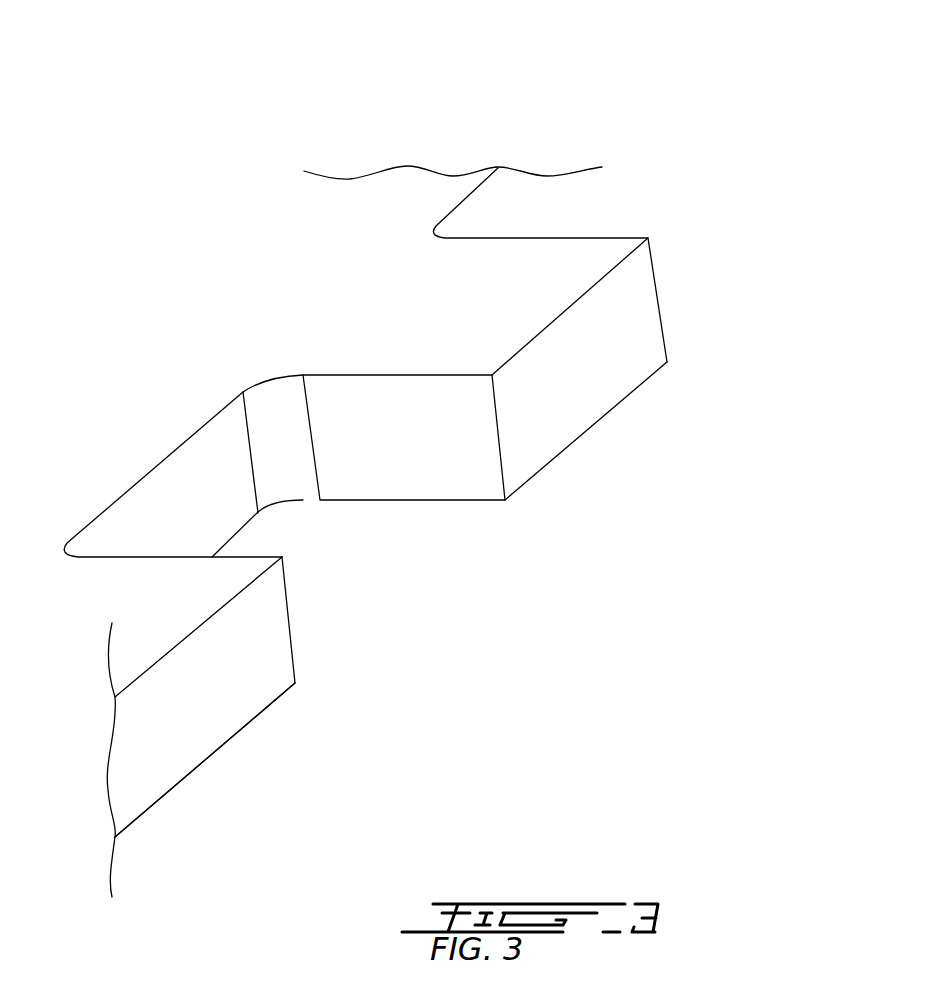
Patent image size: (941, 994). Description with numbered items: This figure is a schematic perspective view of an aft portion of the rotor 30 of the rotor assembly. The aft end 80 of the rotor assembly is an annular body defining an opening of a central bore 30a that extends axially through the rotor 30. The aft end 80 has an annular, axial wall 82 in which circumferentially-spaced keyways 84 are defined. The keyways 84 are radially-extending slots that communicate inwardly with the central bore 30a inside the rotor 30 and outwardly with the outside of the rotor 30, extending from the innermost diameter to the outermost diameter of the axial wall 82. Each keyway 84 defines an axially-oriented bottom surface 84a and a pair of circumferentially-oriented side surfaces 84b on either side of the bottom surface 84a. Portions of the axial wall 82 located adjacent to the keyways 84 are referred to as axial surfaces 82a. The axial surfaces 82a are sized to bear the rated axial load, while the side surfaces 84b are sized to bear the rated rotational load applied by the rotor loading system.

The rotor 30 is at (778, 148).
The aft end 80 is at (495, 453).
The axial wall 82 is at (735, 394).
The axial surfaces 82a is at (557, 385).
The keyways 84 is at (470, 596).
The bottom surface 84a is at (184, 497).
The side surfaces 84b is at (400, 432).
The central bore 30a is at (372, 657).